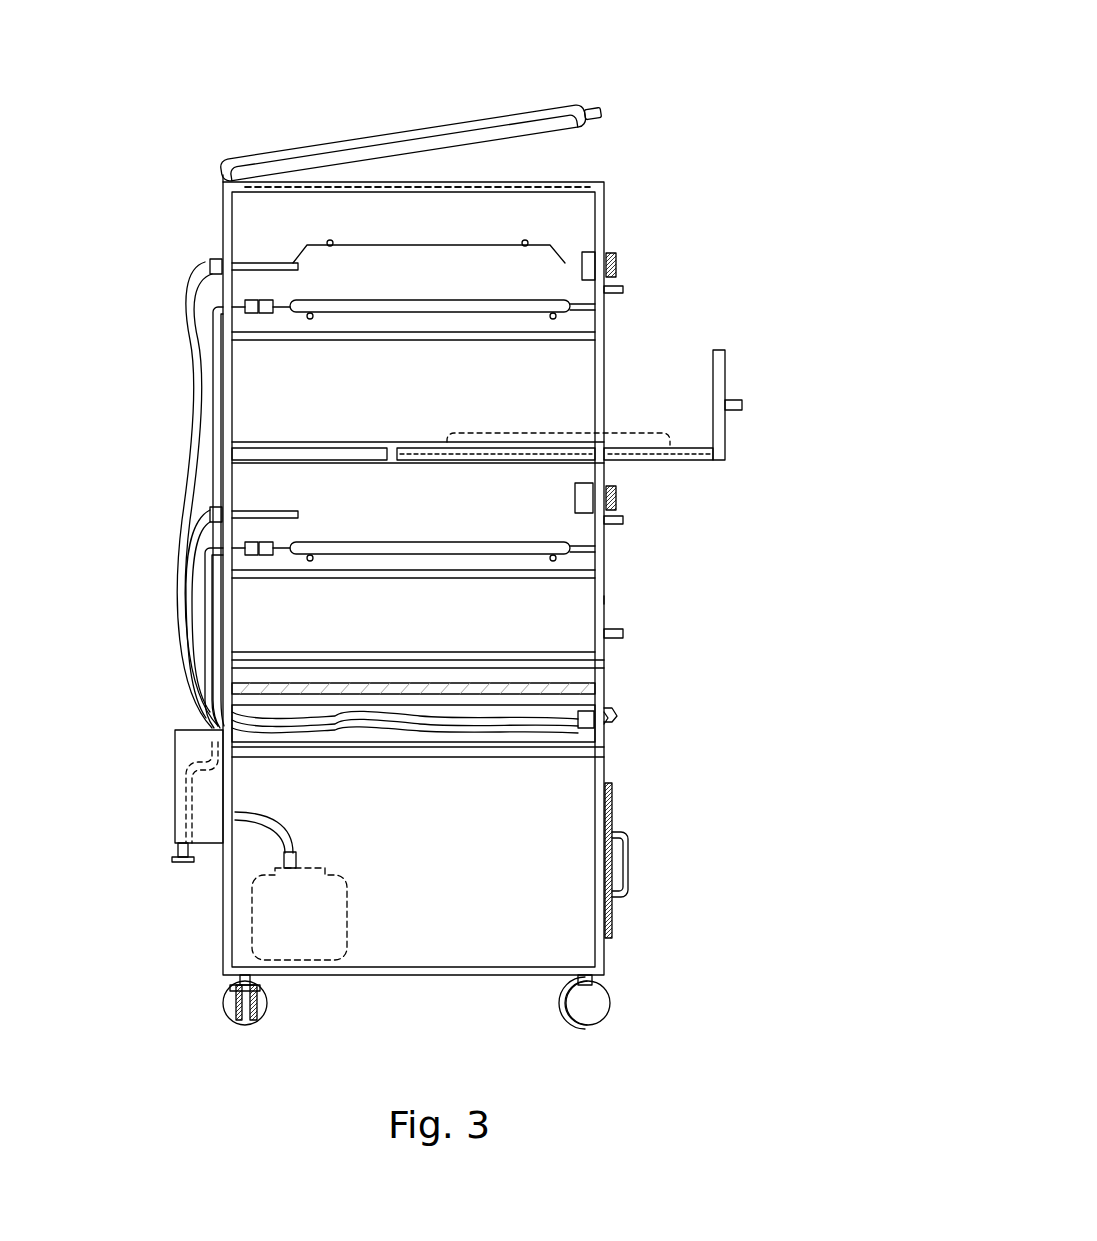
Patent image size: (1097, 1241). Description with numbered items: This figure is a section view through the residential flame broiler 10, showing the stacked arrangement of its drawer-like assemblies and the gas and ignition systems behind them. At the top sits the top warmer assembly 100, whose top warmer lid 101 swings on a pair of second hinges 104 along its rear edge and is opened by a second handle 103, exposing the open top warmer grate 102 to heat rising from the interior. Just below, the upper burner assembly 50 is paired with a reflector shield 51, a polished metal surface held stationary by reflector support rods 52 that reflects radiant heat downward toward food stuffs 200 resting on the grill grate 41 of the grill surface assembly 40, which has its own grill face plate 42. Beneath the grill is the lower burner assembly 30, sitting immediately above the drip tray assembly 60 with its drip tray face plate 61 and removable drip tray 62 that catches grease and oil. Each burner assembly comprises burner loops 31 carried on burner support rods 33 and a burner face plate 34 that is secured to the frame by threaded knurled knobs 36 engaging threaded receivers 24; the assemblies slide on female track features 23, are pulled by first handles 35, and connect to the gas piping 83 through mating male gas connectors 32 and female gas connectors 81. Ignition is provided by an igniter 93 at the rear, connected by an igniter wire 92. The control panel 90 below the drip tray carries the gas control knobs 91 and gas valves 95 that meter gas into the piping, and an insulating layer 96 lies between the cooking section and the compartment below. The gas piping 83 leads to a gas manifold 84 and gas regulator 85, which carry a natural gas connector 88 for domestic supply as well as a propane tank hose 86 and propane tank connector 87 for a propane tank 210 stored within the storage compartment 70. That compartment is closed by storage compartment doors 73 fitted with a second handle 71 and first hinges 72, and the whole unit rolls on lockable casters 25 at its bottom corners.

The residential flame broiler 10 is at (776, 94).
The top warmer assembly 100 is at (425, 110).
The top warmer lid 101 is at (462, 120).
The top warmer grate 102 is at (555, 186).
The second handle 103 is at (603, 110).
The second hinge 104 is at (222, 178).
The upper burner assembly 50 is at (684, 243).
The reflector shield 51 is at (410, 247).
The reflector support rod 52 is at (522, 241).
The igniter 93 is at (252, 515).
The igniter wire 92 is at (440, 728).
The gas piping 83 is at (372, 733).
The female gas connector 81 is at (250, 556).
The male gas connector 32 is at (265, 556).
The burner loop 31 is at (380, 556).
The burner support rod 33 is at (553, 561).
The burner face plate 34 is at (605, 543).
The first handle 35 is at (623, 633).
The threaded knurled knob 36 is at (617, 495).
The threaded receiver 24 is at (575, 498).
The female track feature 23 is at (318, 655).
The food stuffs 200 is at (578, 432).
The grill grate 41 is at (478, 456).
The grill surface assembly 40 is at (772, 405).
The grill face plate 42 is at (726, 368).
The lower burner assembly 30 is at (645, 543).
The drip tray face plate 61 is at (606, 600).
The drip tray assembly 60 is at (692, 625).
The drip tray 62 is at (393, 652).
The insulating layer 96 is at (455, 690).
The control panel 90 is at (645, 737).
The gas control knob 91 is at (618, 717).
The gas valve 95 is at (585, 728).
The gas manifold 84 is at (175, 752).
The gas regulator 85 is at (205, 815).
The natural gas connector 88 is at (172, 858).
The propane tank hose 86 is at (293, 835).
The propane tank connector 87 is at (284, 862).
The propane tank 210 is at (307, 930).
The storage compartment 70 is at (453, 940).
The first hinge 72 is at (606, 915).
The second handle 71 is at (629, 862).
The storage compartment doors 73 is at (618, 870).
The caster 25 is at (598, 1007).